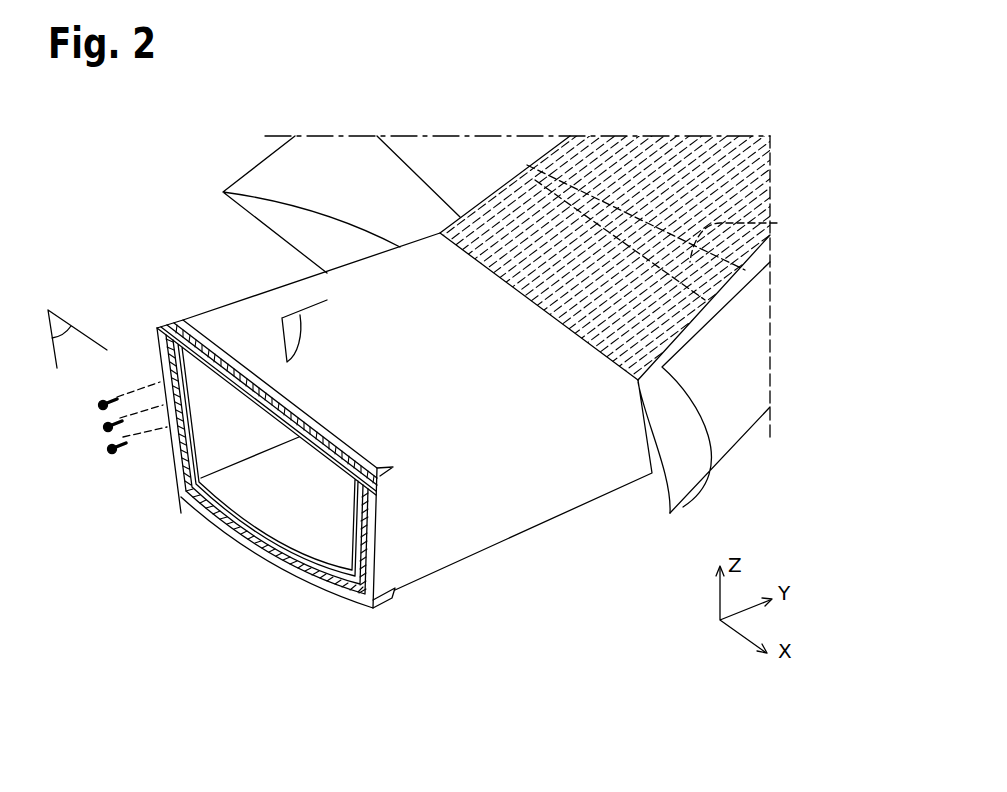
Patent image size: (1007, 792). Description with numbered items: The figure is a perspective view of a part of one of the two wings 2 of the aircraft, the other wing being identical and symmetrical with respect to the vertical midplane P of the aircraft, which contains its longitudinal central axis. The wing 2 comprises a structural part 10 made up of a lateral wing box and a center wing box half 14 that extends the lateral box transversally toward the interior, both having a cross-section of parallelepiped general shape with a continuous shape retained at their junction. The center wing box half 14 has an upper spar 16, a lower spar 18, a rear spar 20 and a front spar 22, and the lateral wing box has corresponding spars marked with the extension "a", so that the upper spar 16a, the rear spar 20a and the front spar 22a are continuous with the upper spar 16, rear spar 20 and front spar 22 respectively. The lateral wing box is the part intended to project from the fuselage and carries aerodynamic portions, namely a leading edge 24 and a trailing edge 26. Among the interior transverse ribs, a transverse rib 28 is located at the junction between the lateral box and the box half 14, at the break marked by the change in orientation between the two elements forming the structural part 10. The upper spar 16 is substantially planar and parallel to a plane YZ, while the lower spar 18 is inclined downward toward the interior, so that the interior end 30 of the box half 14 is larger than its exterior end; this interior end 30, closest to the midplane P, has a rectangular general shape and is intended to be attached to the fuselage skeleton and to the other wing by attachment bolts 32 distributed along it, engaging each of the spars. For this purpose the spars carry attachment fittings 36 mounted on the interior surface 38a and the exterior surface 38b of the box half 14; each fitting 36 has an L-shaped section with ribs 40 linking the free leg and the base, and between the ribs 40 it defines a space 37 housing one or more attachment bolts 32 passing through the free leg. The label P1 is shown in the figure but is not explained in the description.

The wing 2 is at (395, 123).
The structural part 10 is at (732, 207).
The center wing box half 14 is at (553, 542).
The upper spar 16 is at (252, 325).
The upper spar 16a is at (777, 223).
The lower spar 18 is at (312, 540).
The rear spar 20 is at (212, 418).
The rear spar 20a is at (530, 152).
The front spar 22 is at (548, 486).
The front spar 22a is at (667, 412).
The leading edge 24 is at (728, 353).
The trailing edge 26 is at (355, 175).
The transverse rib 28 is at (527, 272).
The interior end 30 is at (233, 557).
The attachment bolts 32 is at (97, 445).
The attachment fittings 36 is at (348, 540).
The space 37 is at (192, 322).
The interior surface 38a is at (275, 500).
The exterior surface 38b is at (438, 443).
The ribs 40 is at (303, 417).
The vertical midplane P is at (63, 320).
The plane P1 is at (297, 325).